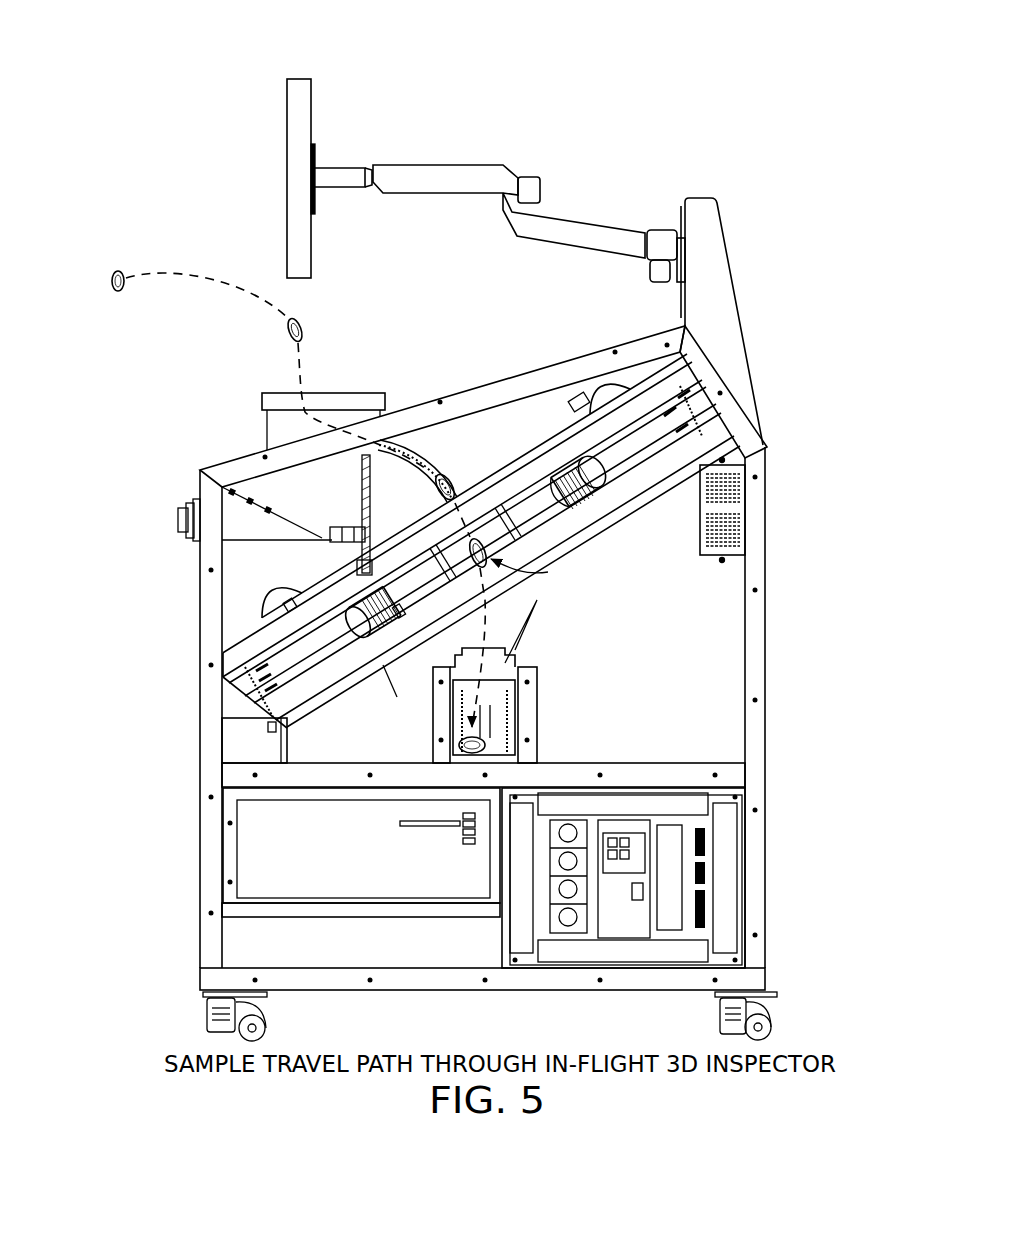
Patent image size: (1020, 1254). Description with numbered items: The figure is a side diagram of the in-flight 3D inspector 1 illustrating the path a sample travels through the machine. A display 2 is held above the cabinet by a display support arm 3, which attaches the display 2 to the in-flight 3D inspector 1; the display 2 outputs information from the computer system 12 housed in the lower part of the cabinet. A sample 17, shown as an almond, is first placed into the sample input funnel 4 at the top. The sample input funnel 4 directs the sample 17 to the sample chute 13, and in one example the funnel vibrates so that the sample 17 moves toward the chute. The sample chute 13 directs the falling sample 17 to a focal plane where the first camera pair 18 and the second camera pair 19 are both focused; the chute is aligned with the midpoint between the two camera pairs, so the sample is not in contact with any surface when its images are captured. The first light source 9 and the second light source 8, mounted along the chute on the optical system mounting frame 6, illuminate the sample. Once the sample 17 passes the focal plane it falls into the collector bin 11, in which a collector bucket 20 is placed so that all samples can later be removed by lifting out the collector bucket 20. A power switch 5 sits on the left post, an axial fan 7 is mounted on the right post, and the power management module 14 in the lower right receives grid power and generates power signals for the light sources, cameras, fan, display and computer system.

The in-flight 3D inspector 1 is at (720, 85).
The display 2 is at (300, 78).
The display support arm 3 is at (469, 165).
The sample input funnel 4 is at (262, 396).
The power switch 5 is at (178, 518).
The optical system mounting frame 6 is at (298, 618).
The axial fan 7 is at (746, 497).
The second light source 8 is at (608, 499).
The first light source 9 is at (410, 617).
The collector bin 11 is at (288, 724).
The computer system 12 is at (304, 856).
The sample chute 13 is at (432, 480).
The power management module 14 is at (724, 905).
The sample 17 is at (118, 271).
The first camera pair 18 is at (250, 690).
The second camera pair 19 is at (692, 398).
The collector bucket 20 is at (515, 725).